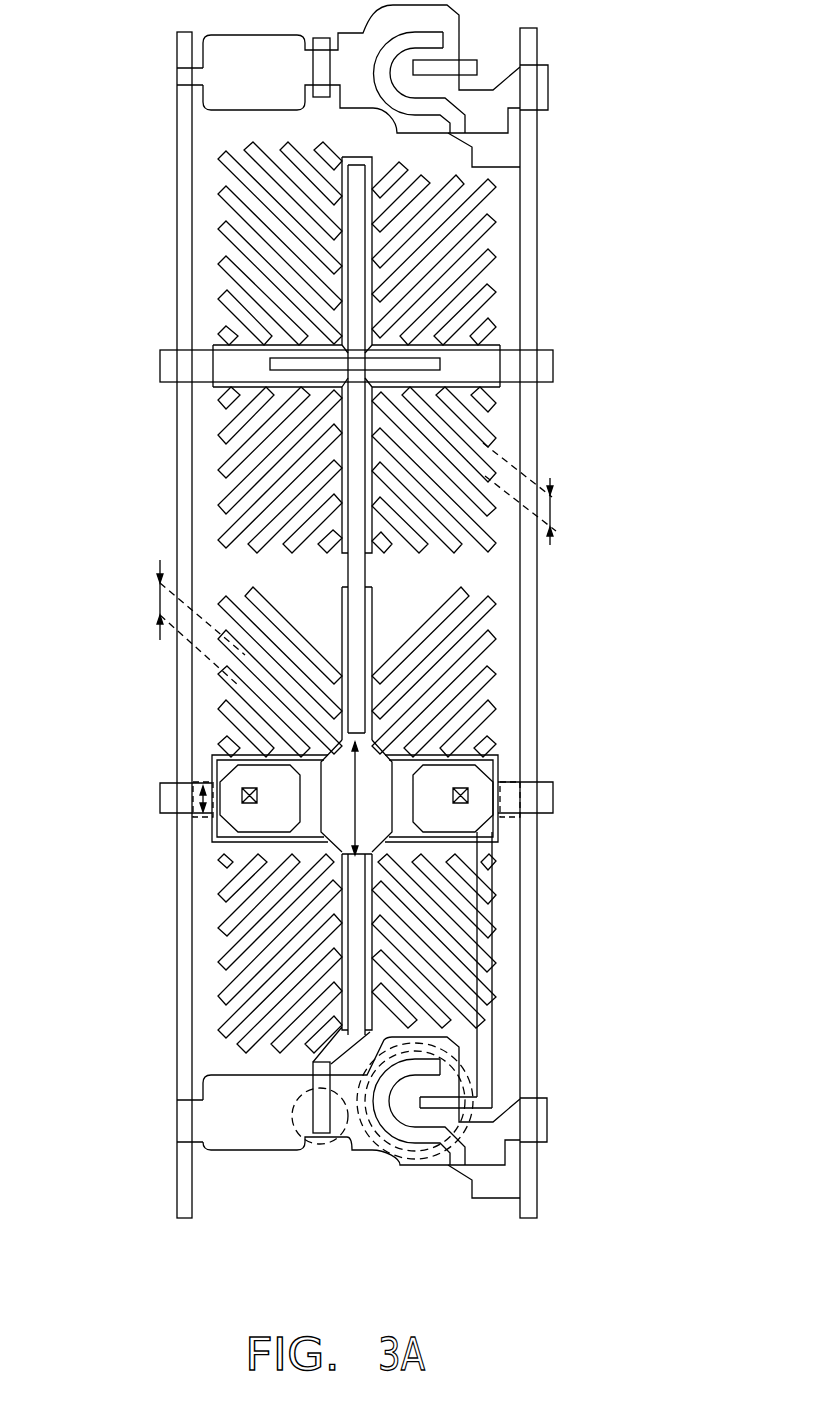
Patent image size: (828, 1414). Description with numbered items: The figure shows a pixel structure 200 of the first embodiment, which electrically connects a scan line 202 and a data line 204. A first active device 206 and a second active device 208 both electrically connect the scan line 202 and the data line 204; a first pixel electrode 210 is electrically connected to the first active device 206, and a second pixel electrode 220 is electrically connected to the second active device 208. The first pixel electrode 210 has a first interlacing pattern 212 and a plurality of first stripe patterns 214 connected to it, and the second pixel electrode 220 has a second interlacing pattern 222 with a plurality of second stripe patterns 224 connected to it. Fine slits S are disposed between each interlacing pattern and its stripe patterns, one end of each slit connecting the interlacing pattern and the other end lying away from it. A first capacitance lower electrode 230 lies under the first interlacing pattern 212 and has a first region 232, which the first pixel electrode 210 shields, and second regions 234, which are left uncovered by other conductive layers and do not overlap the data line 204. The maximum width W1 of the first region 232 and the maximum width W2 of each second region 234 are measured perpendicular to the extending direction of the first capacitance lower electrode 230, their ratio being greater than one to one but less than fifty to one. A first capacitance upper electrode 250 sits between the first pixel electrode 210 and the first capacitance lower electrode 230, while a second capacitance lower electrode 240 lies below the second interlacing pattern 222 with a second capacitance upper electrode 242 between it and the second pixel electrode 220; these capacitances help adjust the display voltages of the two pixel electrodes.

The pixel structure 200 is at (384, 648).
The scan line 202 is at (361, 1048).
The data line 204 is at (537, 1048).
The first active device 206 is at (412, 1155).
The second active device 208 is at (317, 1150).
The first pixel electrode 210 is at (395, 825).
The first interlacing pattern 212 is at (498, 760).
The first stripe patterns 214 is at (482, 668).
The second pixel electrode 220 is at (463, 437).
The second interlacing pattern 222 is at (492, 358).
The second stripe patterns 224 is at (493, 282).
The first capacitance lower electrode 230 is at (553, 798).
The first region 232 is at (313, 786).
The second regions 234 is at (203, 818).
The second capacitance lower electrode 240 is at (553, 364).
The second capacitance upper electrode 242 is at (298, 367).
The first capacitance upper electrode 250 is at (283, 898).
The fine slits S is at (158, 592).
The maximum width of the first region W1 is at (350, 827).
The maximum width of each second region W2 is at (195, 790).